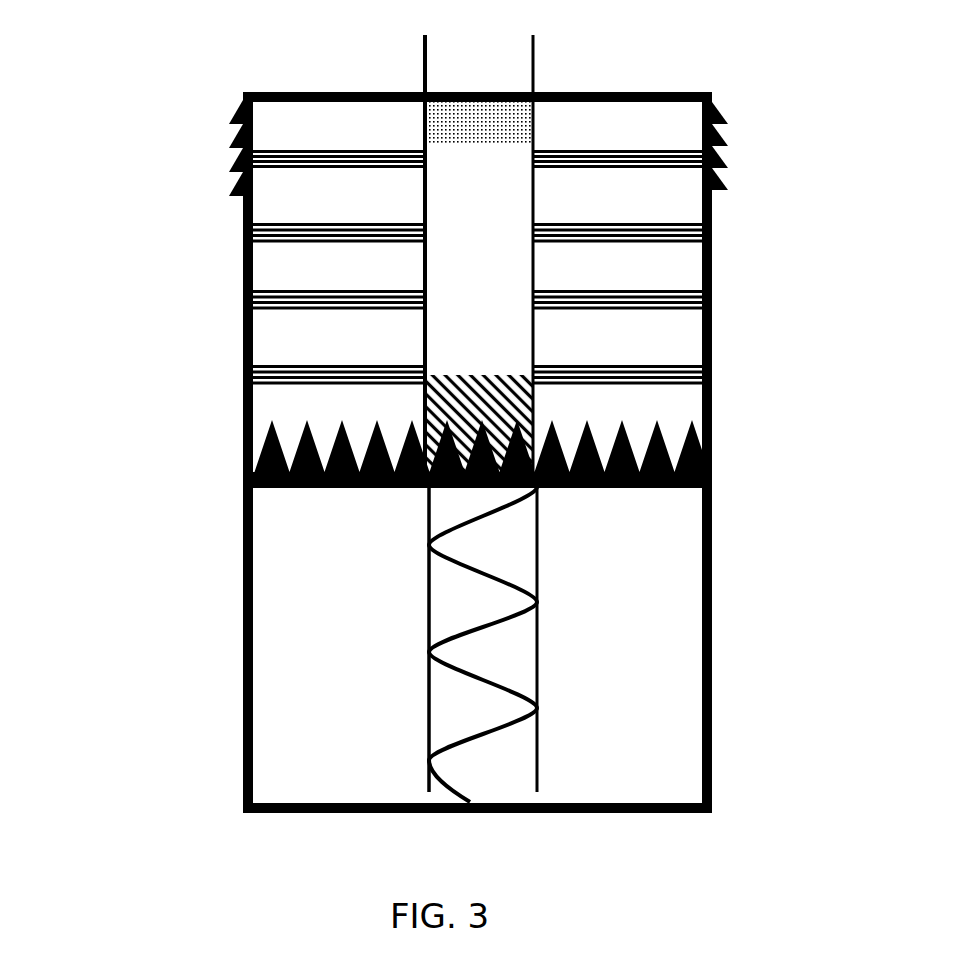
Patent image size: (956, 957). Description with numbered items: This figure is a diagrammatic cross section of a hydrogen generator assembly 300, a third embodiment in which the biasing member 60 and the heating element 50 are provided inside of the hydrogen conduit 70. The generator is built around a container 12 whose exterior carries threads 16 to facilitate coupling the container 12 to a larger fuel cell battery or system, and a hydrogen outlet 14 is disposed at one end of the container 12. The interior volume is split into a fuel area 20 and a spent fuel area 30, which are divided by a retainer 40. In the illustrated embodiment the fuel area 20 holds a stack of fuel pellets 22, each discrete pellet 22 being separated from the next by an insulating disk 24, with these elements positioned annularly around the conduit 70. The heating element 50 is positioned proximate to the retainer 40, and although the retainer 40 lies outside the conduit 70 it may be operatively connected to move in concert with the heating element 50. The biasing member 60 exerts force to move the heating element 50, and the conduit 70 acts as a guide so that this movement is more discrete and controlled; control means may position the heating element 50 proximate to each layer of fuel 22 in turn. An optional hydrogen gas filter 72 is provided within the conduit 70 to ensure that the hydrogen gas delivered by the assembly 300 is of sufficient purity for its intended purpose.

The container 12 is at (245, 322).
The hydrogen outlet 14 is at (472, 49).
The threads 16 is at (241, 164).
The fuel area 20 is at (650, 413).
The fuel pellets 22 is at (692, 187).
The insulating disk 24 is at (578, 363).
The spent fuel area 30 is at (617, 646).
The retainer 40 is at (370, 487).
The heating element 50 is at (425, 413).
The biasing member 60 is at (460, 673).
The hydrogen conduit 70 is at (460, 602).
The hydrogen gas filter 72 is at (500, 131).
The assembly 300 is at (214, 800).